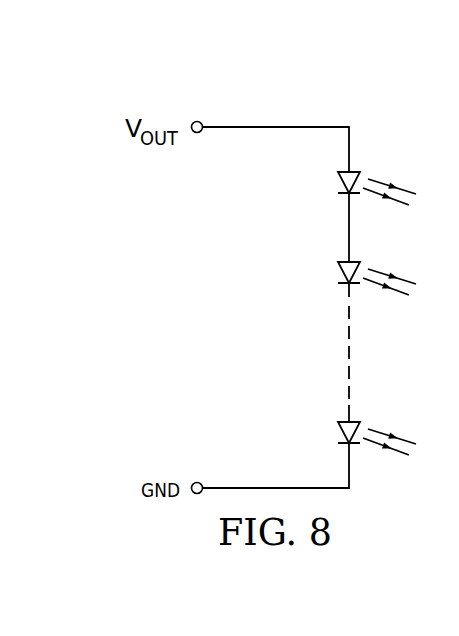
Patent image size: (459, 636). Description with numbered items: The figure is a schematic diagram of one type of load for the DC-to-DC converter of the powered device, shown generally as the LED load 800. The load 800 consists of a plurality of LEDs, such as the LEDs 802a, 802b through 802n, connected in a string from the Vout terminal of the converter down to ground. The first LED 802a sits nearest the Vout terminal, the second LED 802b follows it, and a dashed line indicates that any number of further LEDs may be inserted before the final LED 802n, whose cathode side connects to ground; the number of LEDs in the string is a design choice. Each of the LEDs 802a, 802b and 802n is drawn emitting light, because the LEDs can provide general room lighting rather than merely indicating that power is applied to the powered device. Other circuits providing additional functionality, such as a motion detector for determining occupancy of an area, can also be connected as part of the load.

The LED load 800 is at (322, 95).
The LED 802a is at (339, 187).
The LED 802b is at (339, 277).
The LED 802n is at (339, 437).